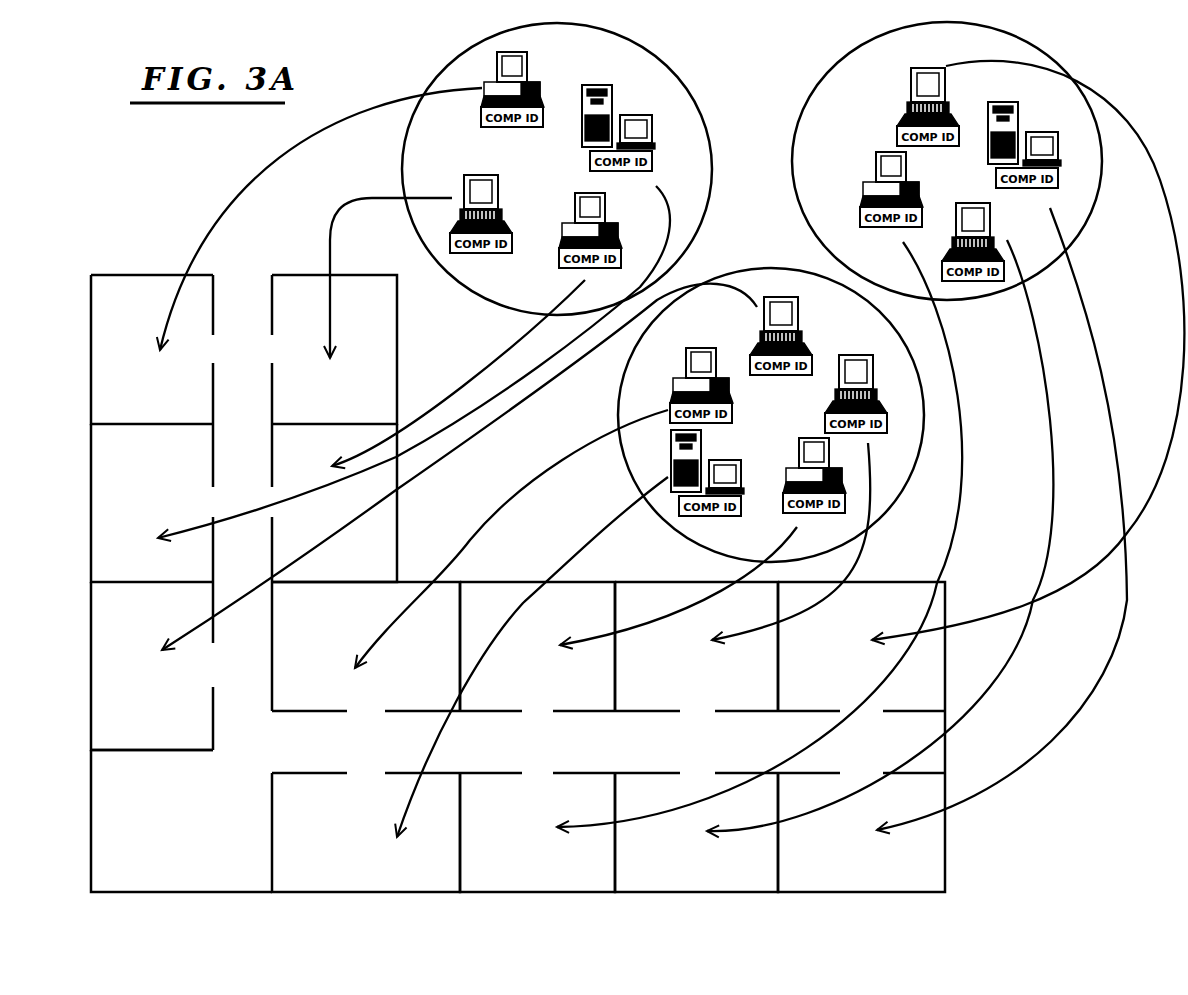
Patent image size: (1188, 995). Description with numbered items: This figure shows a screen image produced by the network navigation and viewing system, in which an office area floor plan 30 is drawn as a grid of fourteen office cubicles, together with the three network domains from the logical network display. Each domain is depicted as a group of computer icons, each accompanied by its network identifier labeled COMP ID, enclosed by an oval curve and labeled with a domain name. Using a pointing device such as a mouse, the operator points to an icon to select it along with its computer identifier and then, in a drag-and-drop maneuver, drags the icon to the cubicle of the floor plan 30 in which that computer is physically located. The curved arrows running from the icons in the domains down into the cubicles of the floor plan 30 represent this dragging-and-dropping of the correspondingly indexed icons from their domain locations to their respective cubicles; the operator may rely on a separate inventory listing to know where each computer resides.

The office area floor plan 30 is at (965, 858).